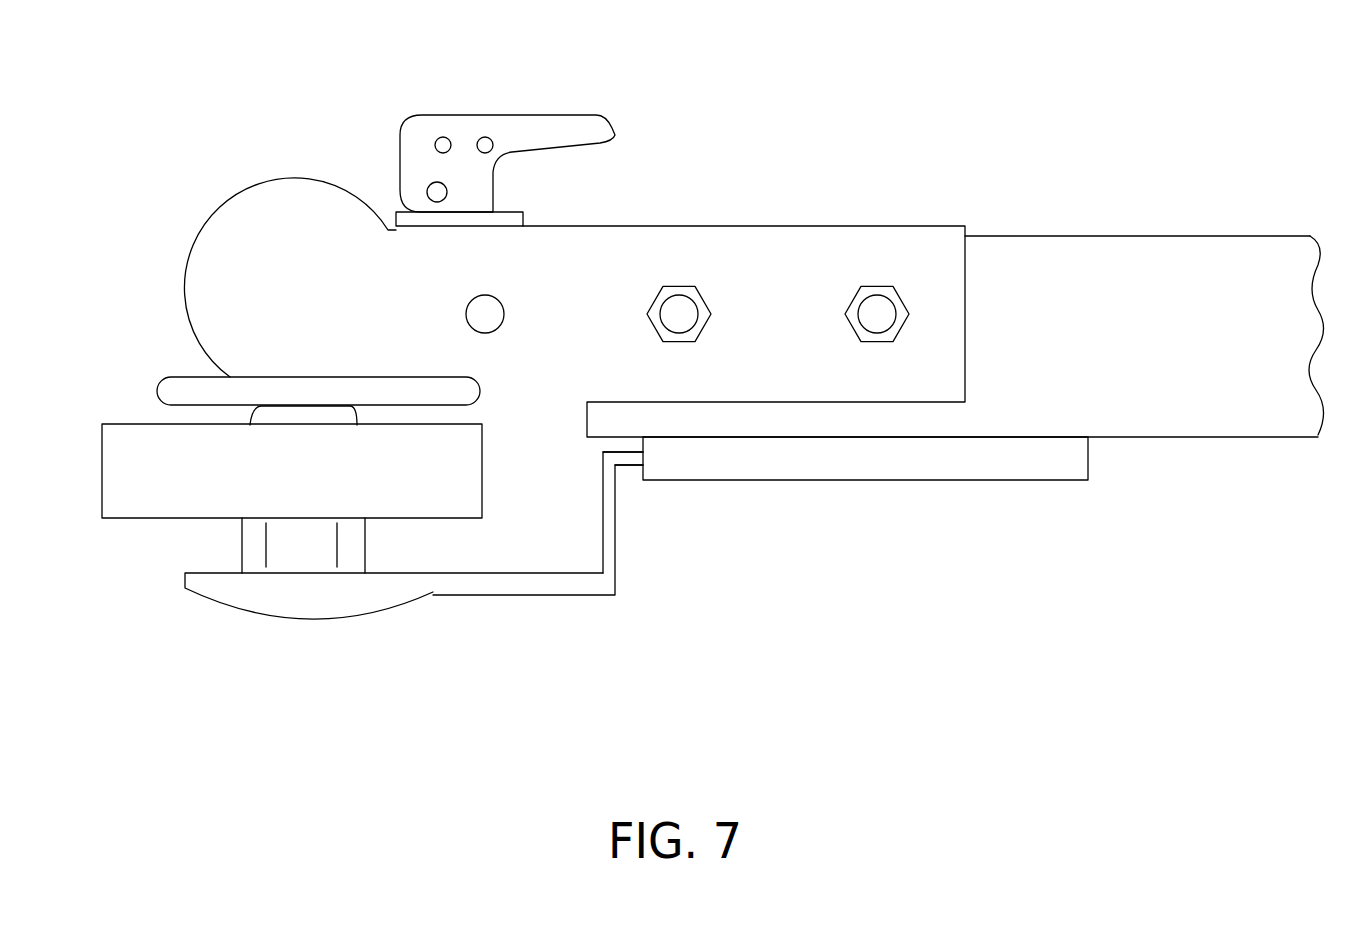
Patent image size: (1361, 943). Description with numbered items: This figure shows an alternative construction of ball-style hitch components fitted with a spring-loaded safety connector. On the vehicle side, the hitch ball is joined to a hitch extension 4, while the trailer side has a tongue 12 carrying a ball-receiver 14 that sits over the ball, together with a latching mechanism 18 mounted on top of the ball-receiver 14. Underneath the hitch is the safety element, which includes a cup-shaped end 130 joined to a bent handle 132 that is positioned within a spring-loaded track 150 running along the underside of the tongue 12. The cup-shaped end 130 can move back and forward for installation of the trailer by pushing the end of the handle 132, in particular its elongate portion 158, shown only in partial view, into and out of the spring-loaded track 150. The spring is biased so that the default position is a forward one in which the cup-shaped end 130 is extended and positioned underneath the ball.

The hitch extension 4 is at (200, 478).
The tongue 12 is at (1170, 267).
The ball-receiver 14 is at (283, 237).
The latching mechanism 18 is at (462, 128).
The cup-shaped end 130 is at (293, 605).
The bent handle 132 is at (611, 556).
The spring-loaded track 150 is at (848, 465).
The elongate portion 158 is at (625, 462).